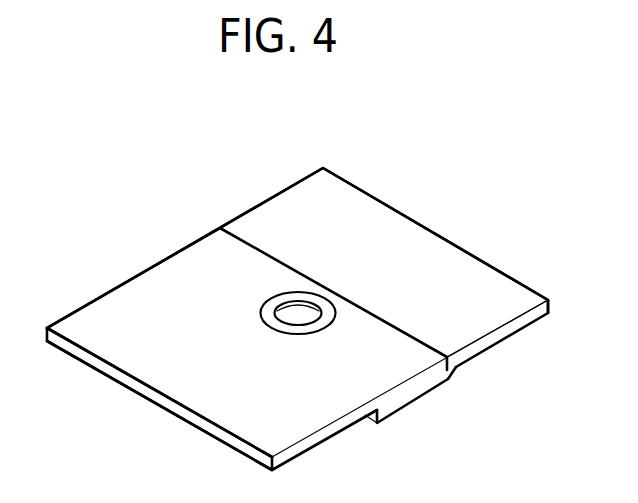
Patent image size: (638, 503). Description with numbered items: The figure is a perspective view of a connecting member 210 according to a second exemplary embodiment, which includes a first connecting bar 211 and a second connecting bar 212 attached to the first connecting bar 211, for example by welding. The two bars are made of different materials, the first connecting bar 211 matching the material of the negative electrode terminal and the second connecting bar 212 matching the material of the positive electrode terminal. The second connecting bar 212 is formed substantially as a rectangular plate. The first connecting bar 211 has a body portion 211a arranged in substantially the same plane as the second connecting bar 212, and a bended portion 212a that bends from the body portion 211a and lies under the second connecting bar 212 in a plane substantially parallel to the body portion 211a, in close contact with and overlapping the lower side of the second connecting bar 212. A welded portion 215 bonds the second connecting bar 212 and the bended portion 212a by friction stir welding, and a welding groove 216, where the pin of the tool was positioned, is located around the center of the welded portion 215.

The connecting member 210 is at (317, 308).
The first connecting bar 211 is at (417, 238).
The body portion 211a is at (497, 334).
The second connecting bar 212 is at (183, 382).
The bended portion 212a is at (407, 398).
The welded portion 215 is at (301, 296).
The welding groove 216 is at (290, 313).